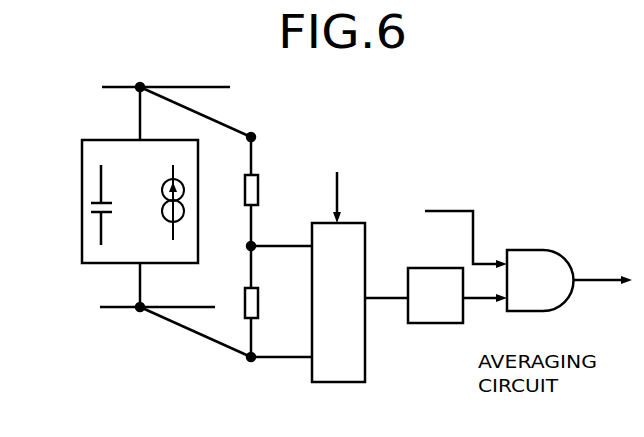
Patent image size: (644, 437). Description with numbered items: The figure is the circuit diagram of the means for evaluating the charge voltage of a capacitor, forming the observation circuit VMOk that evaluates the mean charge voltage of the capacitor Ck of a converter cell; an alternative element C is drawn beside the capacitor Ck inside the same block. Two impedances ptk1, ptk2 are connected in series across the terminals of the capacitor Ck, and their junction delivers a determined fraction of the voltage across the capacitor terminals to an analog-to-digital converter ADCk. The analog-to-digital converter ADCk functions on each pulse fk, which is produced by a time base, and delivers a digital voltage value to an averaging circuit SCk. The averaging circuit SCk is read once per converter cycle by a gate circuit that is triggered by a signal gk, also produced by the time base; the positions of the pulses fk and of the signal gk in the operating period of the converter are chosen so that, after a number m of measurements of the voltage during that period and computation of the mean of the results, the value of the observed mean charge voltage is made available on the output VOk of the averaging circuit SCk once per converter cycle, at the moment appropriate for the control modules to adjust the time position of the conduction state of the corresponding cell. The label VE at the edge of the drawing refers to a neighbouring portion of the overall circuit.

The capacitor Ck is at (140, 201).
The current source of sensor element C is at (163, 204).
The impedance ptk1 is at (258, 192).
The impedance ptk2 is at (246, 307).
The analog-to-digital converter ADCk is at (335, 375).
The pulse signal fk is at (338, 186).
The averaging circuit SCk is at (428, 315).
The signal gk is at (440, 211).
The observation circuit VMOk is at (435, 142).
The output VOk is at (594, 279).
The input voltage VE is at (626, 412).